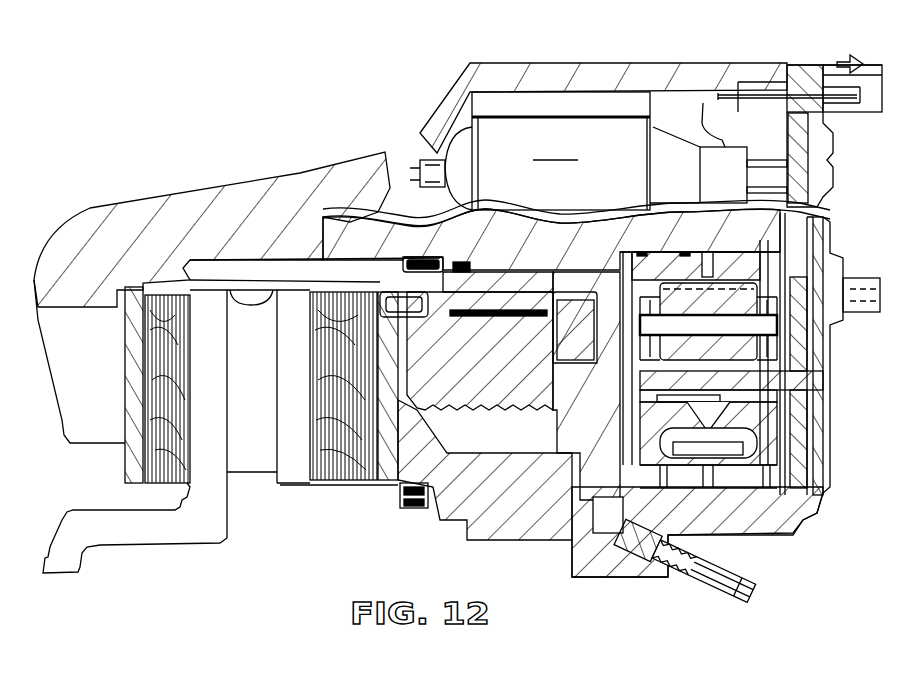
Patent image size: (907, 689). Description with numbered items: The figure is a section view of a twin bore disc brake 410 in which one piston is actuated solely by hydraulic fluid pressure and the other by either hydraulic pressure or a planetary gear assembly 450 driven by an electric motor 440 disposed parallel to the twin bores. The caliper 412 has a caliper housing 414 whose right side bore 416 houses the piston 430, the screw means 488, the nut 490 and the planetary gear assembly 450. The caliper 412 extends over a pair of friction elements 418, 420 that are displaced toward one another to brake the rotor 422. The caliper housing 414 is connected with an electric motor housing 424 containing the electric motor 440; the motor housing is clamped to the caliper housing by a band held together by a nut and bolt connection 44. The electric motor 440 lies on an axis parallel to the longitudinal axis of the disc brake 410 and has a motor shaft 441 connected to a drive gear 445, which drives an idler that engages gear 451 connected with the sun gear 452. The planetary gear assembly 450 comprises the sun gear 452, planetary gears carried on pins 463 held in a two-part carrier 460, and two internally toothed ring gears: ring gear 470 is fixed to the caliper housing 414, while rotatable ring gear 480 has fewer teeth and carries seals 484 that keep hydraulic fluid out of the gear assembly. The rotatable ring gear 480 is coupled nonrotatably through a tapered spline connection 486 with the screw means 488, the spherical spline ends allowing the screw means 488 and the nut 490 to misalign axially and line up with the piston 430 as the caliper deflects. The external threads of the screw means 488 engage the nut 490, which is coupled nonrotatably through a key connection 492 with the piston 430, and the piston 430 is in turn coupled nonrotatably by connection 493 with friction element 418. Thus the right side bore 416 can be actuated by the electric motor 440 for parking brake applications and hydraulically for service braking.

The twin bore disc brake 410 is at (622, 46).
The caliper 412 is at (205, 190).
The caliper housing 414 is at (496, 65).
The right side bore 416 is at (500, 270).
The friction element 418 is at (340, 483).
The friction element 420 is at (157, 483).
The rotor 422 is at (257, 460).
The electric motor housing 424 is at (823, 240).
The piston 430 is at (407, 262).
The electric motor 440 is at (633, 146).
The motor shaft 441 is at (812, 177).
The drive gear 445 is at (802, 138).
The planetary gear assembly 450 is at (766, 538).
The gear 451 is at (800, 346).
The sun gear 452 is at (823, 373).
The two-part carrier 460 is at (782, 410).
The pins 463 is at (708, 321).
The ring gear 470 is at (730, 257).
The rotatable ring gear 480 is at (640, 252).
The seals 484 is at (457, 513).
The tapered spline connection 486 is at (560, 262).
The screw means 488 is at (487, 397).
The nut 490 is at (552, 340).
The key connection 492 is at (547, 321).
The connection 493 is at (393, 284).
The nut and bolt connection 44 is at (857, 280).